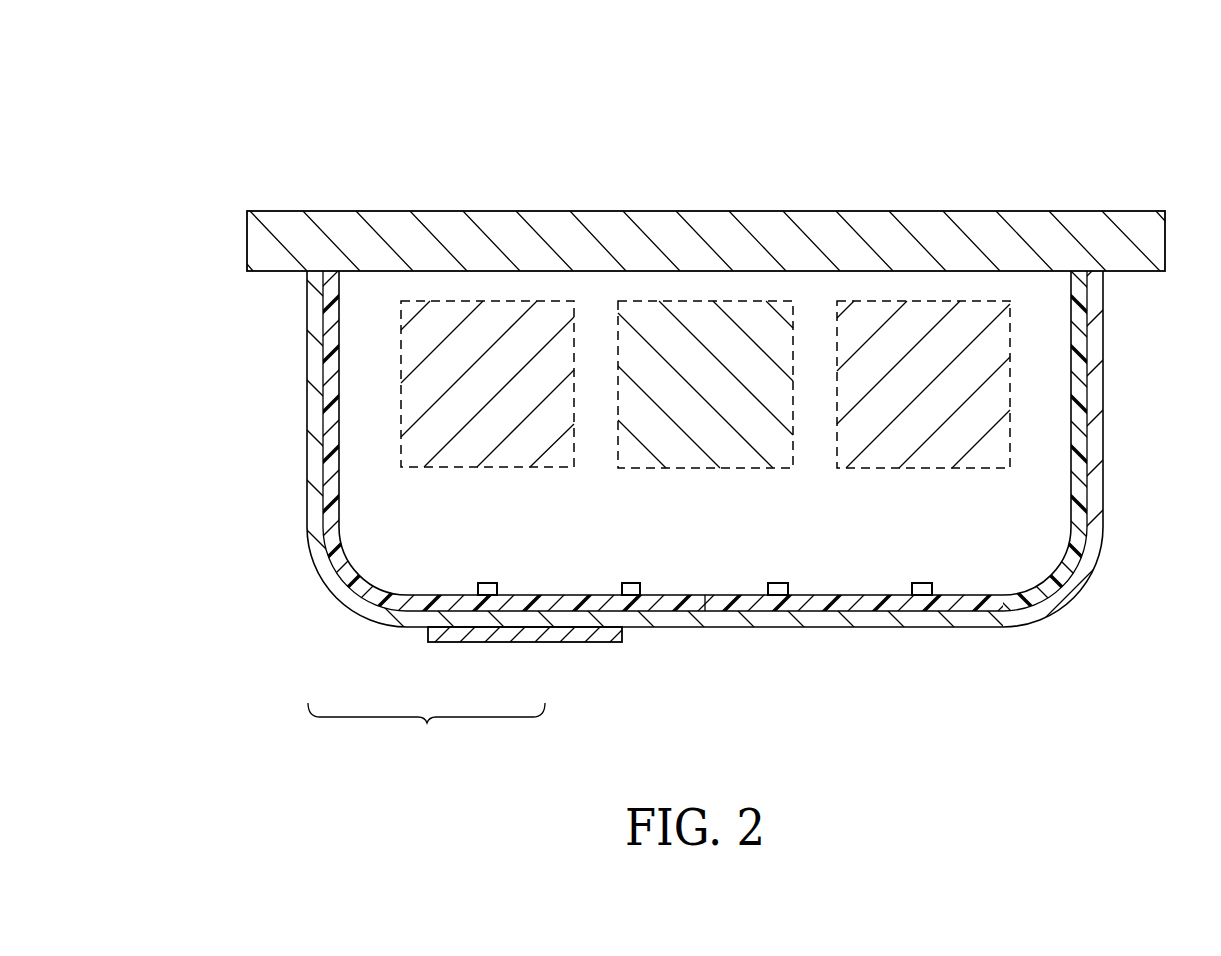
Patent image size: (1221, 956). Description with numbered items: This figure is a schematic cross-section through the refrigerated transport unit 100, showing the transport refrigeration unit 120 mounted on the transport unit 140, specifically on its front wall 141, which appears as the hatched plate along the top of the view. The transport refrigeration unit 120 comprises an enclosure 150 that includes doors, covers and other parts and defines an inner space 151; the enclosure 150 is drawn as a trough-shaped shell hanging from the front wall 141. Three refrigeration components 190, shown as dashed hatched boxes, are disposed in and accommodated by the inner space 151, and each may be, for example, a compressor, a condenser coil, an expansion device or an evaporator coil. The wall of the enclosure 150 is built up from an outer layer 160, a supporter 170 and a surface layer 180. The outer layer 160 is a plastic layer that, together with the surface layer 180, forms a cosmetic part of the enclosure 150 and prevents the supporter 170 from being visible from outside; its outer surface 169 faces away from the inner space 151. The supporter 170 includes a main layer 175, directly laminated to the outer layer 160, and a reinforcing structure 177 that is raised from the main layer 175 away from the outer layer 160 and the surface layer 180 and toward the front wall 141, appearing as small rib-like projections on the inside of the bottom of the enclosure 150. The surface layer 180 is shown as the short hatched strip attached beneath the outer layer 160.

The refrigerated transport unit 100 is at (208, 100).
The transport refrigeration unit 120 is at (1132, 602).
The transport unit 140 is at (706, 207).
The front wall 141 is at (276, 222).
The enclosure 150 is at (427, 725).
The inner space 151 is at (366, 340).
The outer layer 160 is at (356, 592).
The outer surface 169 is at (318, 484).
The supporter 170 is at (410, 606).
The main layer 175 is at (572, 600).
The reinforcing structure 177 is at (634, 585).
The surface layer 180 is at (521, 645).
The refrigeration components 190 is at (526, 312).